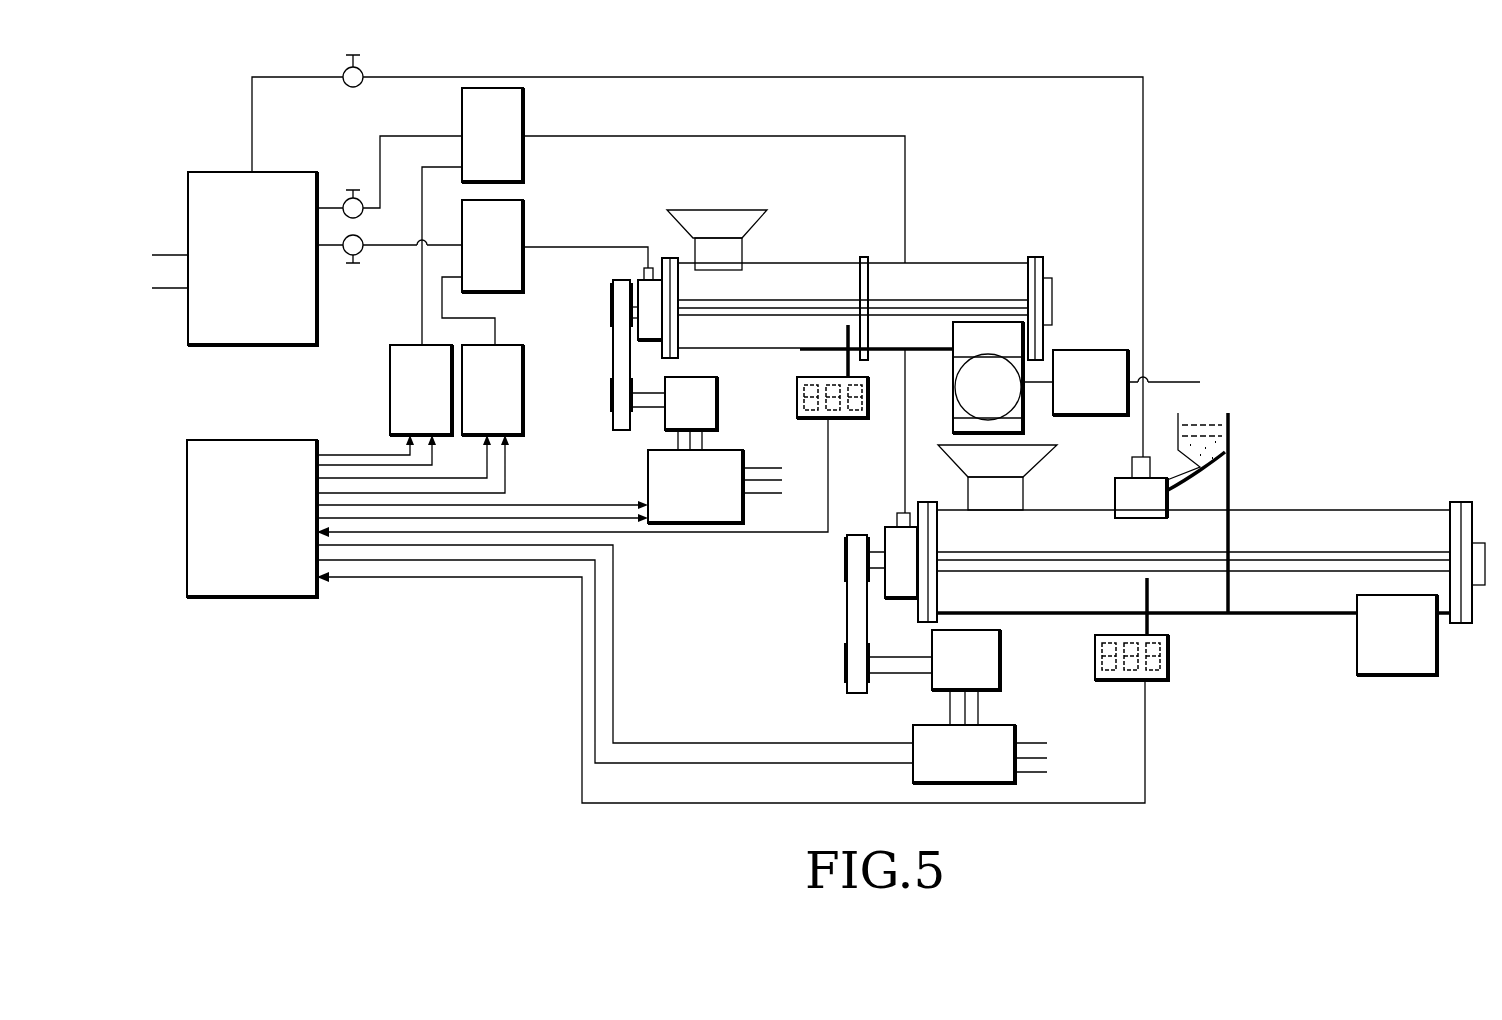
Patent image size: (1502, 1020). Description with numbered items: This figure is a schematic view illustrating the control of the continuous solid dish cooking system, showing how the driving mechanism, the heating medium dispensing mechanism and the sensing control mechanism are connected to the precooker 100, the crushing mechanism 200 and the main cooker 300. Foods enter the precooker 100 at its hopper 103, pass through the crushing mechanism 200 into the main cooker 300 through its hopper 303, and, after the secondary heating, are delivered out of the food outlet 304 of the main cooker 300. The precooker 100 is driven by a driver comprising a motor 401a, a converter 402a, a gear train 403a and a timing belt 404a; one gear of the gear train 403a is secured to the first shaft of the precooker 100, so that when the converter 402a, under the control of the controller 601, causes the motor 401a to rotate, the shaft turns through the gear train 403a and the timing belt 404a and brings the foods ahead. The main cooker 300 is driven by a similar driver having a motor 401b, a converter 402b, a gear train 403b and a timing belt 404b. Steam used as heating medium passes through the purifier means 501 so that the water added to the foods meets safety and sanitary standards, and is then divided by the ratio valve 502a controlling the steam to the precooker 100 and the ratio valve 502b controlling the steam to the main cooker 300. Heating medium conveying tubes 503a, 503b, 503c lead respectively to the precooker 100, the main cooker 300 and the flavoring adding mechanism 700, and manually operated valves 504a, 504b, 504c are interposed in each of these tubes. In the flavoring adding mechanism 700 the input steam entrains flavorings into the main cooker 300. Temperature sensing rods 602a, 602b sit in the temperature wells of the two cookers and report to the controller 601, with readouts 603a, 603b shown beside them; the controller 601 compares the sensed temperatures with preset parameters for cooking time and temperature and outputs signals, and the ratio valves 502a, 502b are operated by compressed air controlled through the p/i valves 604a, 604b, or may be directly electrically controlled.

The precooker 100 is at (982, 260).
The hopper of first extruder 103 is at (735, 216).
The crushing mechanism 200 is at (954, 355).
The main cooker 300 is at (1397, 510).
The hopper of second extruder 303 is at (1027, 482).
The food outlet 304 is at (1393, 665).
The motor 401a is at (718, 388).
The motor 401b is at (1003, 668).
The converter 402a is at (745, 450).
The converter 402b is at (1017, 725).
The gear train 403a is at (611, 300).
The gear train 403b is at (892, 555).
The timing belt 404a is at (612, 356).
The timing belt 404b is at (889, 614).
The purifier means 501 is at (237, 138).
The ratio valve 502a is at (526, 216).
The ratio valve 502b is at (525, 121).
The heating medium conveying tube 503a is at (583, 244).
The heating medium conveying tube 503b is at (906, 178).
The heating medium conveying tube 503c is at (1144, 230).
The manually operated valve 504a is at (360, 256).
The manually operated valve 504b is at (343, 188).
The manually operated valve 504c is at (362, 74).
The controller 601 is at (250, 600).
The temperature sensing rod 602a is at (848, 352).
The temperature sensing rod 602b is at (1155, 618).
The first pressure indicator 603a is at (848, 420).
The second pressure indicator 603b is at (1170, 680).
The p/i valve 604a is at (525, 435).
The p/i valve 604b is at (388, 428).
The flavoring adding mechanism 700 is at (1229, 432).